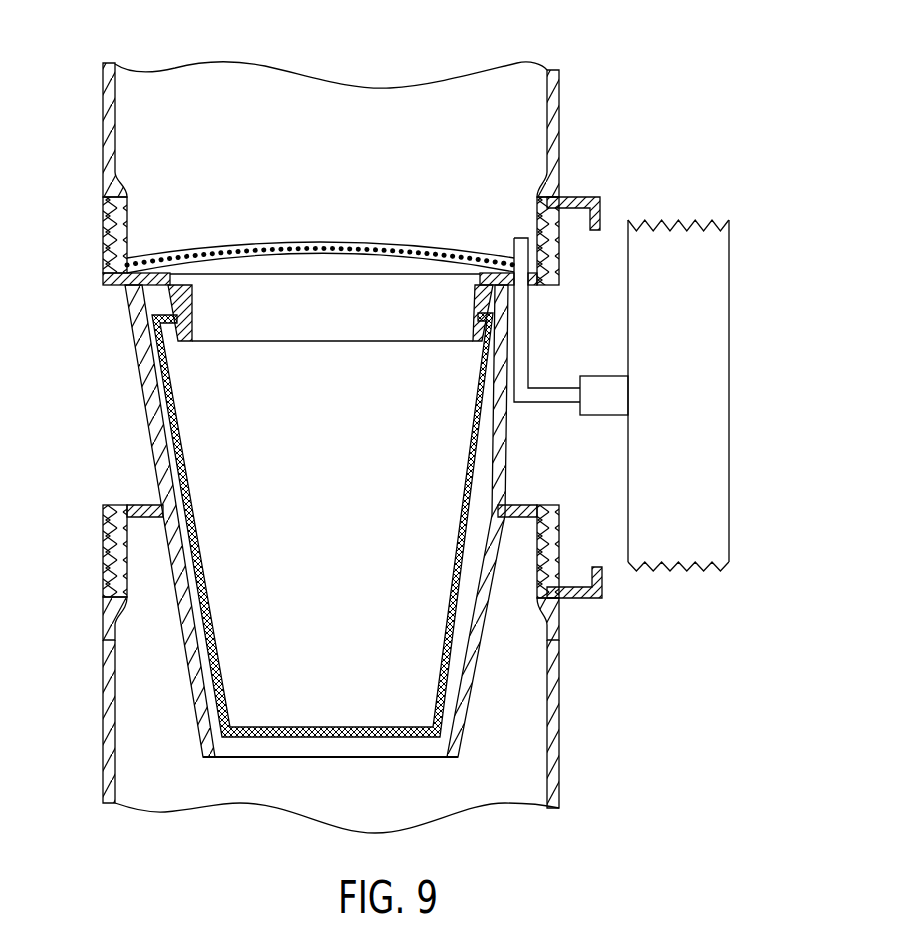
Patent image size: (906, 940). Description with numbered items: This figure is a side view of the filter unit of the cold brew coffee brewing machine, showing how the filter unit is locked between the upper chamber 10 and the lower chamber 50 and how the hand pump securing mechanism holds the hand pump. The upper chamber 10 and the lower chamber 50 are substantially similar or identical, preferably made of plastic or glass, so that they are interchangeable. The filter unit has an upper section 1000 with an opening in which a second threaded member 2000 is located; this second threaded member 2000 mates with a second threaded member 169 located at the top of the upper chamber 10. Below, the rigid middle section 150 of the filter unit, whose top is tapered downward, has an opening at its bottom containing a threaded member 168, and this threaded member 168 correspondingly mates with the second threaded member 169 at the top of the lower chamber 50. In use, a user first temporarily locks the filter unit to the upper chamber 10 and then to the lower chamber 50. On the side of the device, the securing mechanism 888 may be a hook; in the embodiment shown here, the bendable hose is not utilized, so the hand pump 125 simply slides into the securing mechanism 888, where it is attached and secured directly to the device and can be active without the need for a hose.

The upper chamber 10 is at (102, 83).
The second threaded member 2000 is at (105, 212).
The upper section 1000 is at (103, 253).
The middle section 150 is at (103, 530).
The threaded member 168 is at (103, 578).
The lower chamber 50 is at (103, 740).
The second threaded member 169 is at (538, 232).
The securing mechanism 888 is at (587, 197).
The hand pump 125 is at (726, 303).